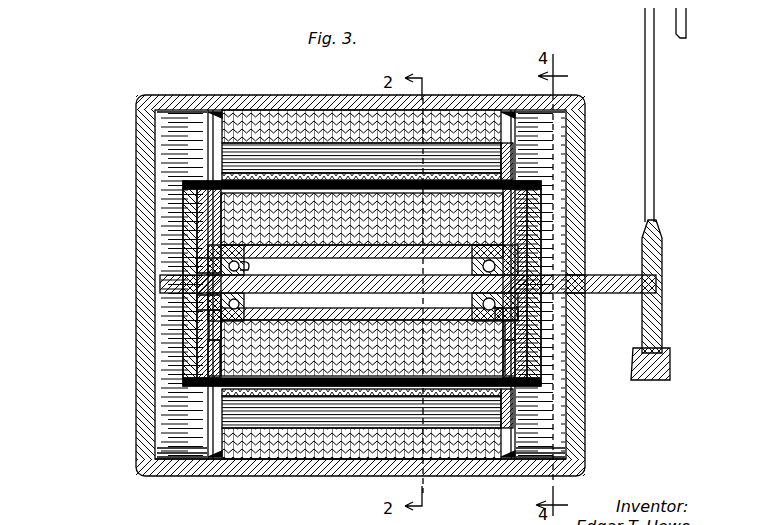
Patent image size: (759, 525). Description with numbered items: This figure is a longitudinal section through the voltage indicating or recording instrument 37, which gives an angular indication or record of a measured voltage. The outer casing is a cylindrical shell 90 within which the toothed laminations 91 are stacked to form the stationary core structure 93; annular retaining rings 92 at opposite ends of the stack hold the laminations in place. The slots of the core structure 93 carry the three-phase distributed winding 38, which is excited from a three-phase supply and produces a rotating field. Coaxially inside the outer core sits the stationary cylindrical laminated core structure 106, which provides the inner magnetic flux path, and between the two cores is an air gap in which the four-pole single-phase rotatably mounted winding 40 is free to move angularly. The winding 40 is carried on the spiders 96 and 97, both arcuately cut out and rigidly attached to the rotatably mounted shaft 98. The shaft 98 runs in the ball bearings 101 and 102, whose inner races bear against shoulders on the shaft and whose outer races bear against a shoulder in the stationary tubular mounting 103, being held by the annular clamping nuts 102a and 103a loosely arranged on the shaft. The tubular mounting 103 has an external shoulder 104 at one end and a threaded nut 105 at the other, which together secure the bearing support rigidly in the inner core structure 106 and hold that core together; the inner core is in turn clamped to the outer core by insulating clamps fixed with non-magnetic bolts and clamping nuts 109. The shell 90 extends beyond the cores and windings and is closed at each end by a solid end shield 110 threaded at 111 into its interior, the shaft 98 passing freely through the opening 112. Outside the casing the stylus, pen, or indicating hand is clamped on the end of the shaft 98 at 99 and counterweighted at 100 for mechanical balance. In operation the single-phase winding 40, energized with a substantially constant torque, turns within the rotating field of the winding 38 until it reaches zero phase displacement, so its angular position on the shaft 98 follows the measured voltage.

The voltage indicating or recording instrument 37 is at (703, 140).
The three-phase distributed winding 38 is at (449, 150).
The four-pole single-phase rotatably mounted winding 40 is at (547, 191).
The cylindrical shell 90 is at (303, 468).
The toothed laminations 91 is at (362, 451).
The annular retaining rings 92 is at (207, 104).
The core structure 93 is at (303, 118).
The spider 96 is at (215, 240).
The spider 97 is at (520, 222).
The shaft 98 is at (648, 278).
The clamp 99 is at (652, 262).
The counterweight 100 is at (650, 365).
The ball bearing 101 is at (215, 297).
The ball bearing 102 is at (486, 294).
The annular clamping nut 102a is at (496, 302).
The stationary tubular mounting 103 is at (226, 262).
The annular clamping nut 103a is at (236, 294).
The external shoulder 104 is at (215, 322).
The threaded nut 105 is at (495, 318).
The cylindrical laminated core structure 106 is at (230, 196).
The clamping nuts 109 is at (210, 356).
The solid end shields 110 is at (147, 420).
The threads 111 is at (140, 112).
The opening 112 is at (576, 270).